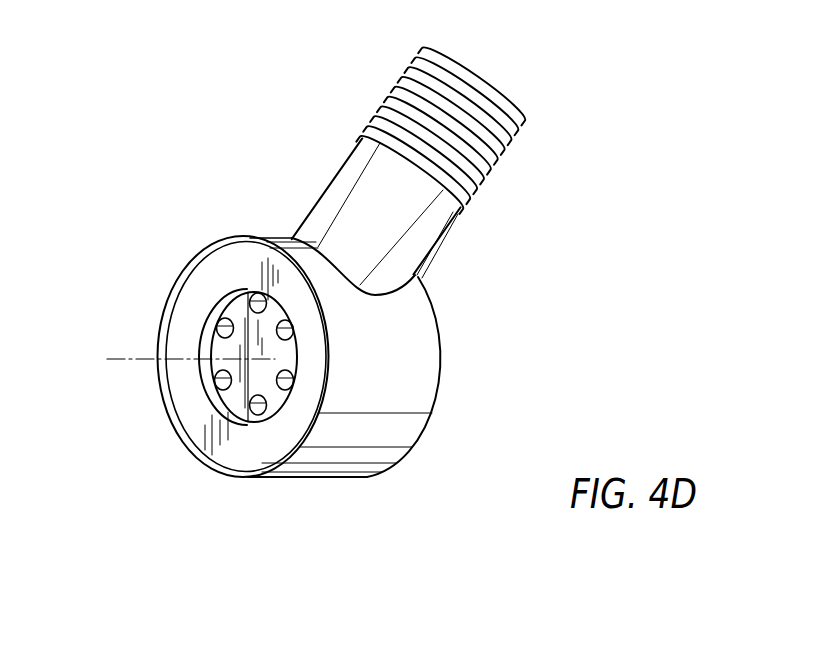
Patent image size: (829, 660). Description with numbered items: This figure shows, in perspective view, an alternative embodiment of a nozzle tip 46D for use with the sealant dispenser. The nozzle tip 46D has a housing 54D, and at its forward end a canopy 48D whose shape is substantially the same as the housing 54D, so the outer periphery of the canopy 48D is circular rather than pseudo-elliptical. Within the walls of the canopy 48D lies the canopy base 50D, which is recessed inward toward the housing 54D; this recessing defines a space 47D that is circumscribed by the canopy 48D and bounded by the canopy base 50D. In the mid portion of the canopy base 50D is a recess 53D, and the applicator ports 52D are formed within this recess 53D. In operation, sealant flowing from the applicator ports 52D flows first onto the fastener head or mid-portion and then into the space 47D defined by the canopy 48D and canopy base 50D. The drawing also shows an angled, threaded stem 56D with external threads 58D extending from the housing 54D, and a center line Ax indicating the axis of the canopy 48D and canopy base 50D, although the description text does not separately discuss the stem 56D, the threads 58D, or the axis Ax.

The nozzle tip 46D is at (483, 319).
The space 47D is at (229, 265).
The canopy 48D is at (168, 422).
The canopy base 50D is at (188, 323).
The applicator ports 52D is at (221, 323).
The recess 53D is at (242, 397).
The housing 54D is at (358, 453).
The stem 56D is at (330, 143).
The threads 58D is at (485, 167).
The axis Ax is at (123, 361).